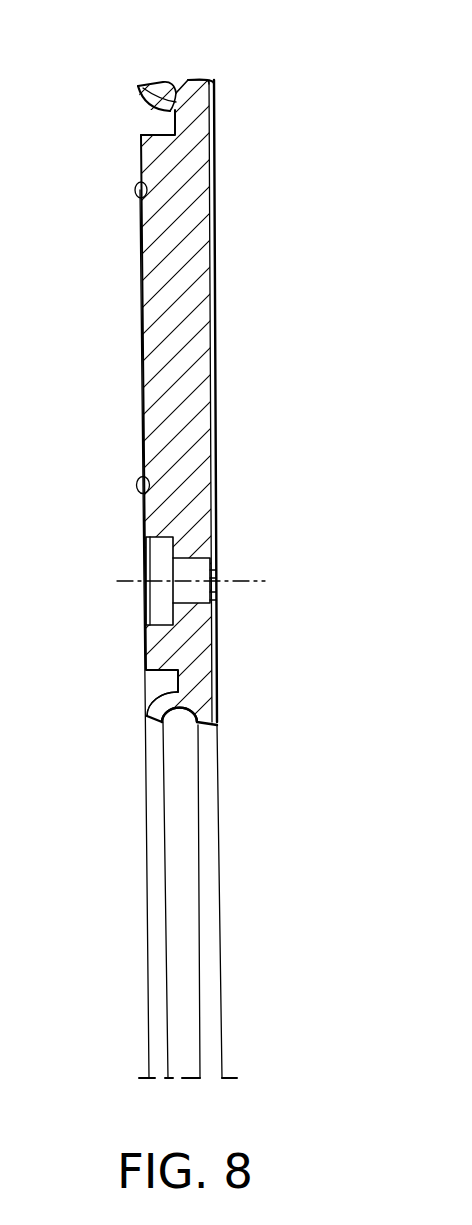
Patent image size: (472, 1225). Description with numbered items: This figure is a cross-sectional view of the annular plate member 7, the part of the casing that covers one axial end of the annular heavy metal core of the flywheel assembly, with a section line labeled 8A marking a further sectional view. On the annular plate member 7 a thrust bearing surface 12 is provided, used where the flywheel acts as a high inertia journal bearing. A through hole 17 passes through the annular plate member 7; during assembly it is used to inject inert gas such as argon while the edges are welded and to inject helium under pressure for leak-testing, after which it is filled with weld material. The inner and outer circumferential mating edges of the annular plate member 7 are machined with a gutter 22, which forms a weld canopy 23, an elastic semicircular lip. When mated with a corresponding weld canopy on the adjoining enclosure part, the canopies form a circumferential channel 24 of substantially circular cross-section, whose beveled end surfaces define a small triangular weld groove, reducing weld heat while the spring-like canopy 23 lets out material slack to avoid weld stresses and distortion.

The annular plate member 7 is at (228, 242).
The thrust bearing surface 12 is at (140, 337).
The through hole 17 is at (218, 575).
The gutter 22 is at (178, 92).
The weld canopy 23 is at (153, 108).
The circumferential channel 24 is at (157, 82).
The section line 8A is at (374, 722).